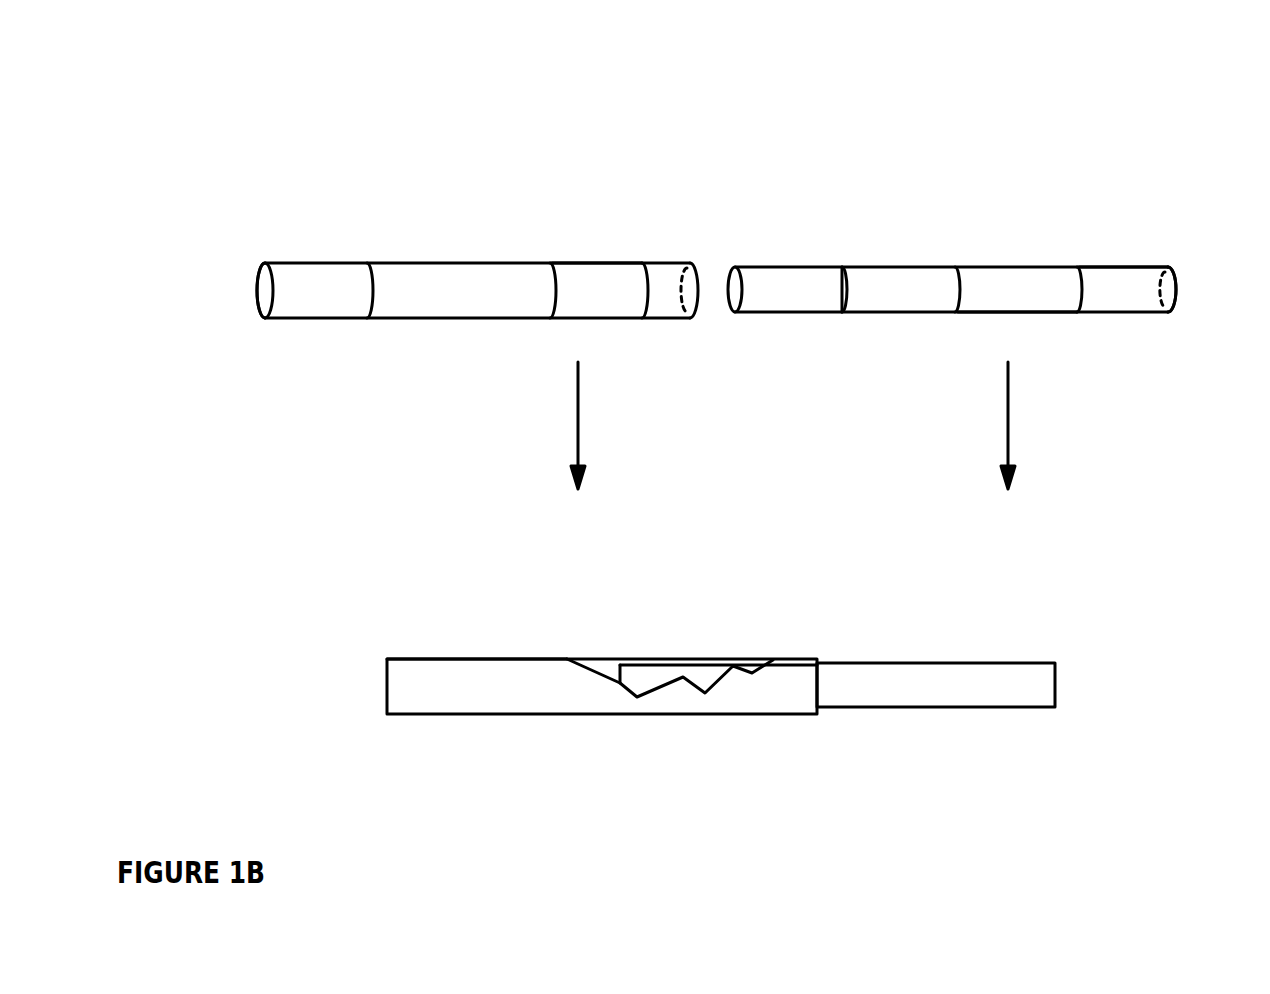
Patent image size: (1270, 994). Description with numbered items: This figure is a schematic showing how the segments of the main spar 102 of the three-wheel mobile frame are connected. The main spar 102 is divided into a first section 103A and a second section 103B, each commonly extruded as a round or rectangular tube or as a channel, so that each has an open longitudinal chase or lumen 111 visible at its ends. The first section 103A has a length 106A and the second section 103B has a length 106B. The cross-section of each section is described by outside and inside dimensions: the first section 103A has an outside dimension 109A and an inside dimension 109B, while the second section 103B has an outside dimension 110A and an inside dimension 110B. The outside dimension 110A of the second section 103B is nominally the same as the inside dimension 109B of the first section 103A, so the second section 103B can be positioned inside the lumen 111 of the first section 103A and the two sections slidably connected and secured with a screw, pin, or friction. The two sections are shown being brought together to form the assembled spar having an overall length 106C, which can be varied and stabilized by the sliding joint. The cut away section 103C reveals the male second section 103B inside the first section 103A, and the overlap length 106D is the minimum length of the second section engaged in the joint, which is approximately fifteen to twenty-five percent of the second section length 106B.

The main spar 102 is at (593, 82).
The first section 103A is at (596, 262).
The second section 103B is at (1113, 266).
The cut away section 103C is at (707, 672).
The length of the first section 106A is at (265, 256).
The length of the second section 106B is at (1172, 256).
The overall length of the main spar 106C is at (1055, 653).
The second section overlap length 106D is at (621, 722).
The outside dimension of the first section 109A is at (642, 302).
The inside dimension of the first section 109B is at (553, 292).
The outside dimension of the second section 110A is at (960, 290).
The inside dimension of the second section 110B is at (1042, 312).
The lumen 111 is at (265, 293).